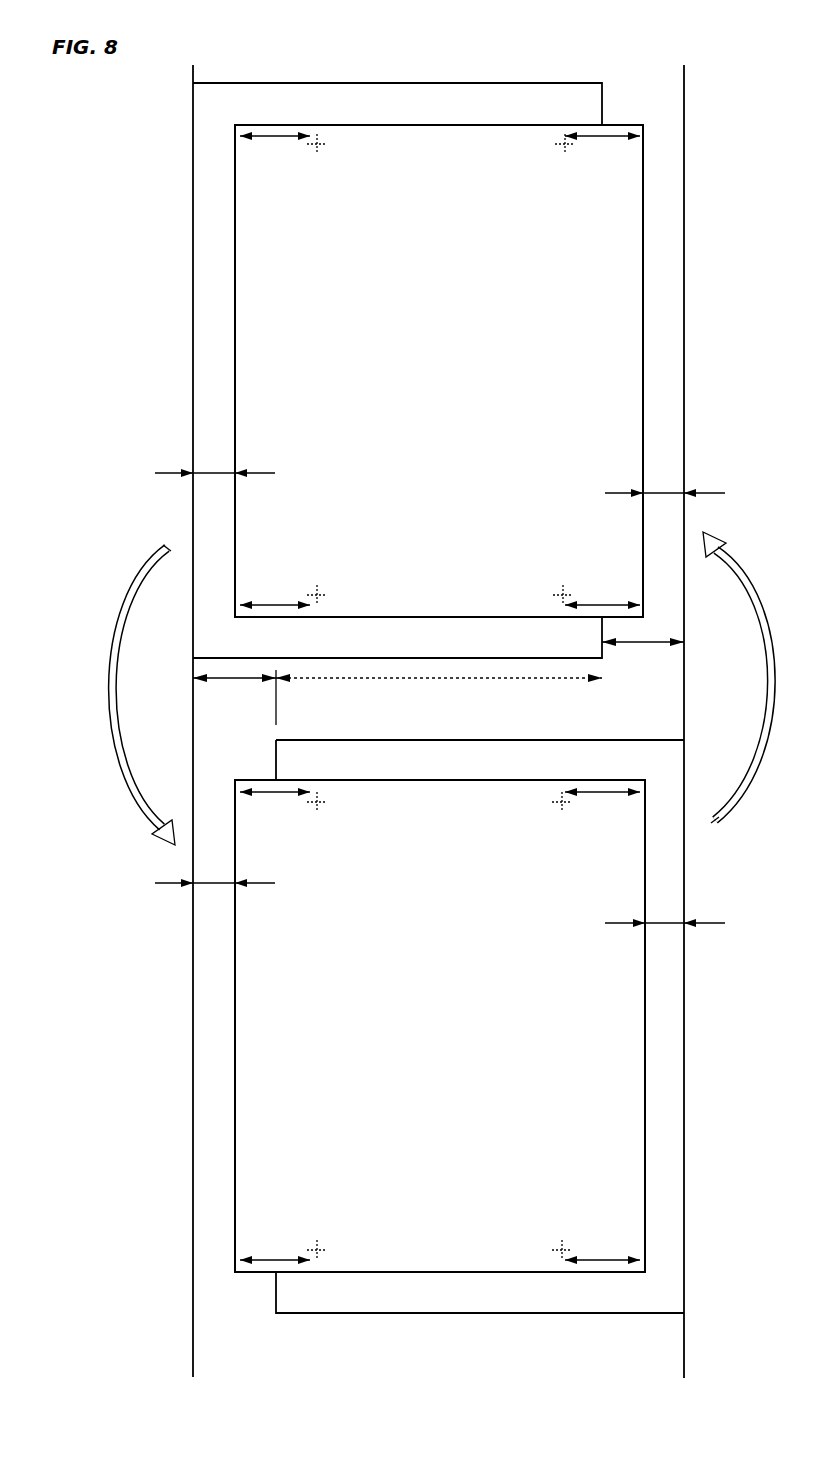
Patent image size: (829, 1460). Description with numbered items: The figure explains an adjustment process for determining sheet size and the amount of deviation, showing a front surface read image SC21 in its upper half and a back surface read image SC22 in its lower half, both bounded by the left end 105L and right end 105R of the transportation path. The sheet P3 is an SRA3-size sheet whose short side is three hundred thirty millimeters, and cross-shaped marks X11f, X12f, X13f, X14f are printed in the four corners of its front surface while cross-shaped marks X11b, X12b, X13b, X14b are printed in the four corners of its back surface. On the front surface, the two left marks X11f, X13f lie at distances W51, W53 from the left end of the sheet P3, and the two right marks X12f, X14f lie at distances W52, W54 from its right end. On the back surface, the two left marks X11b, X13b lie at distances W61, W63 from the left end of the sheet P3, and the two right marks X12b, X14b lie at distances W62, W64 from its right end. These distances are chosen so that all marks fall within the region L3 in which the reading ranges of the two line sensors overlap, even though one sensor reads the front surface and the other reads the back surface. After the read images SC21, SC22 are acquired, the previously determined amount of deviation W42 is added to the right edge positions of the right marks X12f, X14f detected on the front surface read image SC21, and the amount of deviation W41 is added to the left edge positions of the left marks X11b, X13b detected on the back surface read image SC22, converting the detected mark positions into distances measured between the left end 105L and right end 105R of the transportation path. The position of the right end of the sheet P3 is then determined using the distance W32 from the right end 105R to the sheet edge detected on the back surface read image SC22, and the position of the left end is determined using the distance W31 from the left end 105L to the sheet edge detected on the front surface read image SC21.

The left end of the transportation path 105L is at (190, 1090).
The right end of the transportation path 105R is at (688, 258).
The front surface read image SC21 is at (515, 83).
The back surface read image SC22 is at (515, 740).
The sheet P3 is at (240, 277).
The distance W51 is at (270, 140).
The distance W52 is at (604, 132).
The distance W53 is at (274, 602).
The distance W54 is at (596, 602).
The distance W61 is at (270, 796).
The distance W62 is at (606, 796).
The distance W63 is at (274, 1257).
The distance W64 is at (602, 1257).
The distance from the left end of the transportation path to the left end of the she W31 is at (215, 470).
The distance from the right end of the transportation path to the right end of the s W32 is at (665, 490).
The amount of deviation W41 is at (234, 697).
The amount of deviation W42 is at (643, 656).
The region in which the reading ranges overlap L3 is at (439, 692).
The cross-shaped mark X11f is at (318, 156).
The cross-shaped mark X12f is at (566, 156).
The cross-shaped mark X13f is at (318, 595).
The cross-shaped mark X14f is at (564, 595).
The cross-shaped mark X11b is at (318, 812).
The cross-shaped mark X12b is at (563, 812).
The cross-shaped mark X13b is at (318, 1248).
The cross-shaped mark X14b is at (563, 1248).